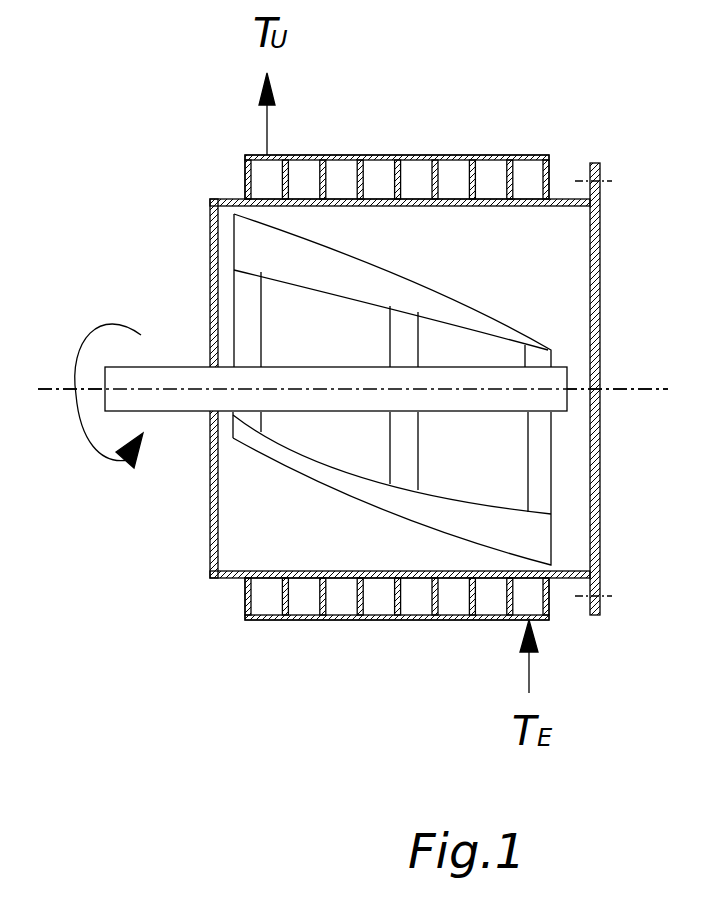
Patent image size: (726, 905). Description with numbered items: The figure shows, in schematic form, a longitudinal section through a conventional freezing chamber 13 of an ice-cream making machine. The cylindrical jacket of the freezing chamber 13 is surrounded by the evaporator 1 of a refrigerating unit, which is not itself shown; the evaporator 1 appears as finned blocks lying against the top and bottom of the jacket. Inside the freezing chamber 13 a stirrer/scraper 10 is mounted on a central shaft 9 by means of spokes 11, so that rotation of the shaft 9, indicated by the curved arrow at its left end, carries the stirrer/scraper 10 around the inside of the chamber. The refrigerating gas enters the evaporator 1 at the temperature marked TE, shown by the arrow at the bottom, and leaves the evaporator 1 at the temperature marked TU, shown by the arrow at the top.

The evaporator 1 is at (452, 170).
The shaft 9 is at (553, 403).
The stirrer/scraper 10 is at (342, 482).
The spokes 11 is at (527, 462).
The freezing chamber 13 is at (560, 248).